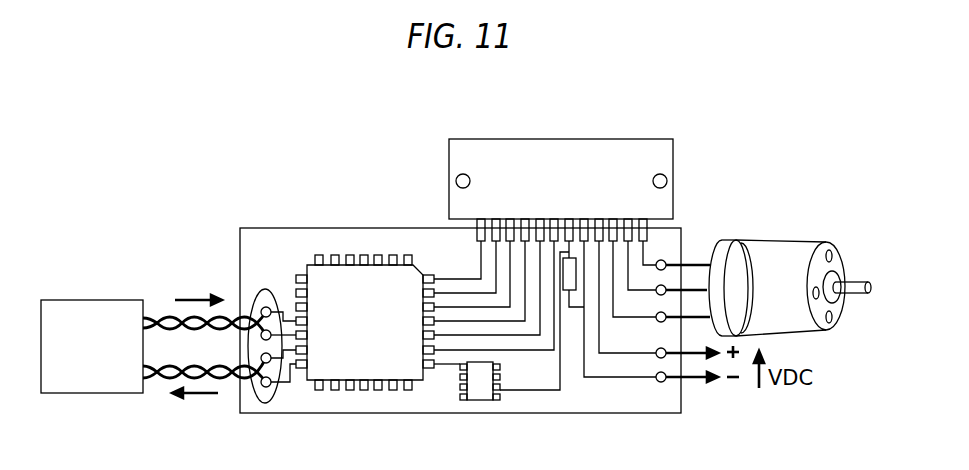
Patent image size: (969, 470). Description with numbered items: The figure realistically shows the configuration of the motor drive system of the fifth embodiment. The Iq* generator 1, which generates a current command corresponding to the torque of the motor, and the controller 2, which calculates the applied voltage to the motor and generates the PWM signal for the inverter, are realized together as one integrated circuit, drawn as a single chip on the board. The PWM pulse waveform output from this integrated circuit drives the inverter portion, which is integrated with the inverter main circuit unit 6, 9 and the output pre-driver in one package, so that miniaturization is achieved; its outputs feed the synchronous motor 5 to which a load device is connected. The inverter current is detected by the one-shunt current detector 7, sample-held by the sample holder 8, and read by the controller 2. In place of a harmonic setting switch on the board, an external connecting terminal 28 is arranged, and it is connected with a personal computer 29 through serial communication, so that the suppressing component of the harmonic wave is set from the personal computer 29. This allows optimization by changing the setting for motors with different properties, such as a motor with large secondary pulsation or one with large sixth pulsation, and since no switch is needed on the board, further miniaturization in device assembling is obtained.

The Iq* generator 1 is at (365, 290).
The controller 2 is at (348, 255).
The synchronous motor 5 is at (802, 240).
The inverter main circuit unit 6 is at (561, 163).
The drive circuit 9 is at (613, 140).
The one-shunt current detector 7 is at (571, 291).
The sample holder 8 is at (504, 372).
The external connecting terminal 28 is at (262, 288).
The personal computer 29 is at (94, 300).